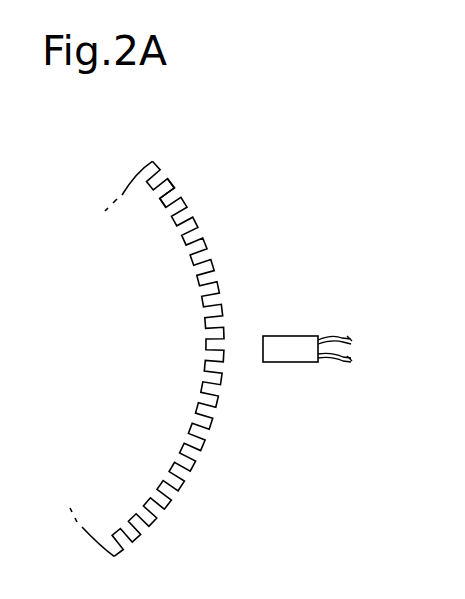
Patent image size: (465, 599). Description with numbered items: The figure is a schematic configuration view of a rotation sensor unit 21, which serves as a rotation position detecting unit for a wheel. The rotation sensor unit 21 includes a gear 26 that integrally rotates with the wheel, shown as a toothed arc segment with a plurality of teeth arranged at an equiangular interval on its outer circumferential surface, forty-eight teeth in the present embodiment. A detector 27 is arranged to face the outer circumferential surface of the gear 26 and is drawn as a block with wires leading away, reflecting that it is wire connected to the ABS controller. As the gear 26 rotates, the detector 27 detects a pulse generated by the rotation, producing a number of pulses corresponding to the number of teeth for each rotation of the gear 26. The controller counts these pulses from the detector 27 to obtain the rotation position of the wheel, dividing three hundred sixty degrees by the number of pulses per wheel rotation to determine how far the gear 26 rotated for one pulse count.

The rotation sensor unit 21 is at (279, 177).
The gear 26 is at (160, 218).
The detector 27 is at (292, 336).